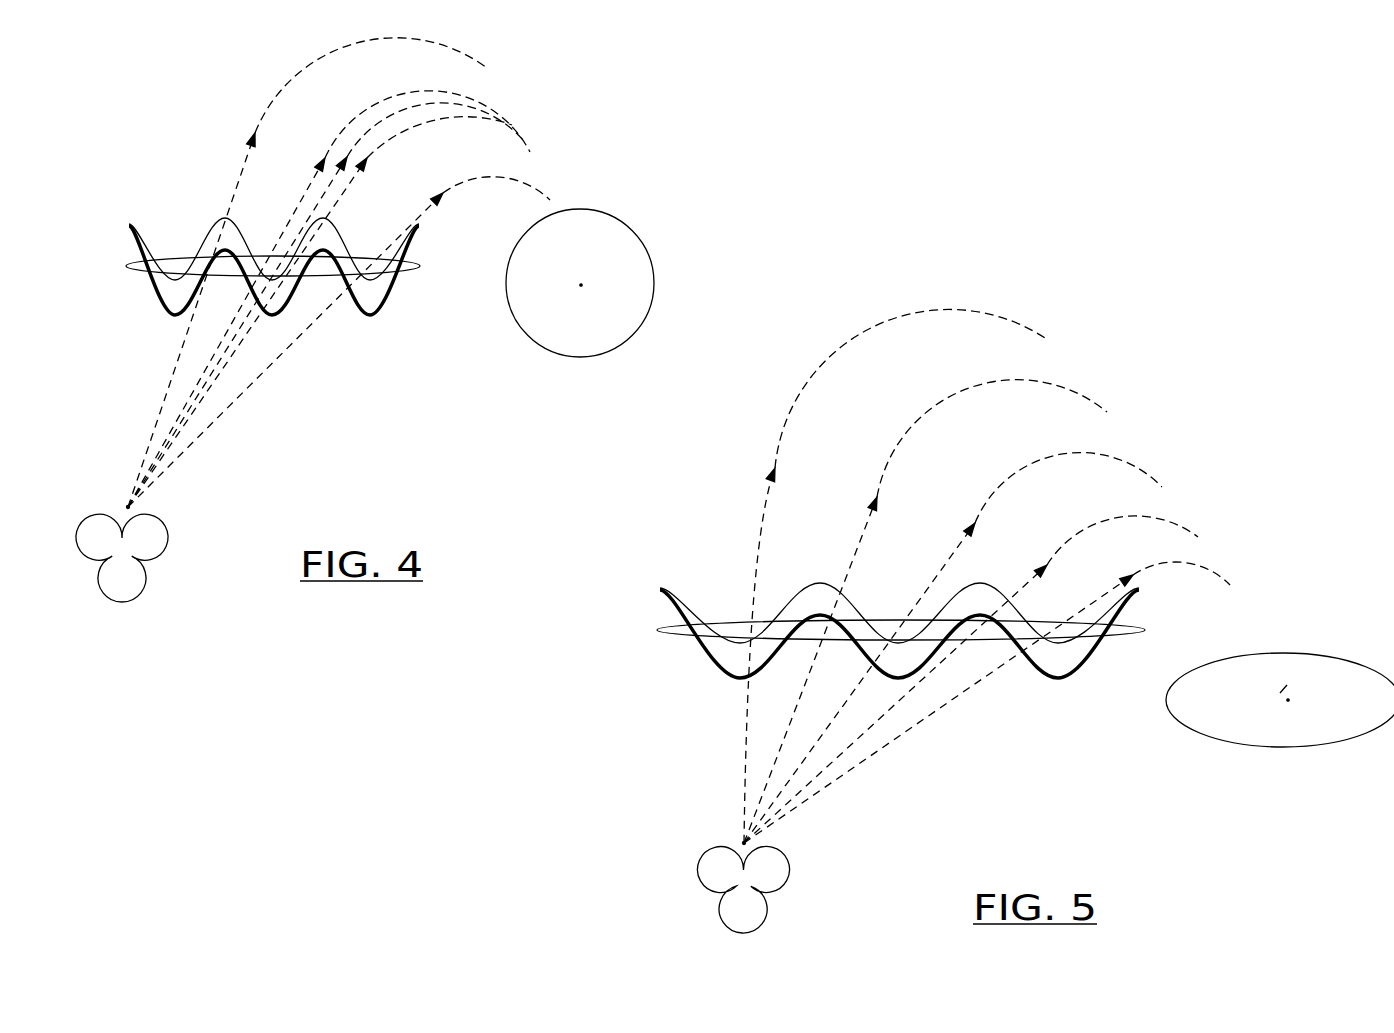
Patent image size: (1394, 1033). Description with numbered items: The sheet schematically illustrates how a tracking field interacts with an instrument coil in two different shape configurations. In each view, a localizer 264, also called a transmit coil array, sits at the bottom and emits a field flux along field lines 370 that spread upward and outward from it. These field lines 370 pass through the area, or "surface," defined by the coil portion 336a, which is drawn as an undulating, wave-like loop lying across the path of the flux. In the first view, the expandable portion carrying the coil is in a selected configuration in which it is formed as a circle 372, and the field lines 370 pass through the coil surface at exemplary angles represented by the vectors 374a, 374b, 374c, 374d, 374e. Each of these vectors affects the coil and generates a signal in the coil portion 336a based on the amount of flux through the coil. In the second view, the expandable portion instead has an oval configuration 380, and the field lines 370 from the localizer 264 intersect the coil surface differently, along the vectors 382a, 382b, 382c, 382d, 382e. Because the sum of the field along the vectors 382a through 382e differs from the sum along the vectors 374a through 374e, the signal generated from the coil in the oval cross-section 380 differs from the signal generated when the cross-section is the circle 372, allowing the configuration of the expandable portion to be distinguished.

In FIG. 4, the localizer 264 is at (147, 568).
In FIG. 5, the localizer 264 is at (790, 873).
In FIG. 4, the field lines 370 is at (132, 497).
In FIG. 5, the field lines 370 is at (742, 822).
In FIG. 4, the circle 372 is at (517, 326).
In FIG. 4, the vector 374a is at (241, 162).
In FIG. 4, the vector 374b is at (283, 227).
In FIG. 4, the vector 374c is at (316, 191).
In FIG. 4, the vector 374d is at (354, 171).
In FIG. 4, the vector 374e is at (423, 212).
In FIG. 5, the coil portion 336a is at (712, 667).
In FIG. 5, the oval configuration 380 is at (1220, 740).
In FIG. 5, the vector 382a is at (768, 492).
In FIG. 5, the vector 382b is at (853, 562).
In FIG. 5, the vector 382c is at (945, 567).
In FIG. 5, the vector 382d is at (1038, 577).
In FIG. 5, the vector 382e is at (1107, 585).